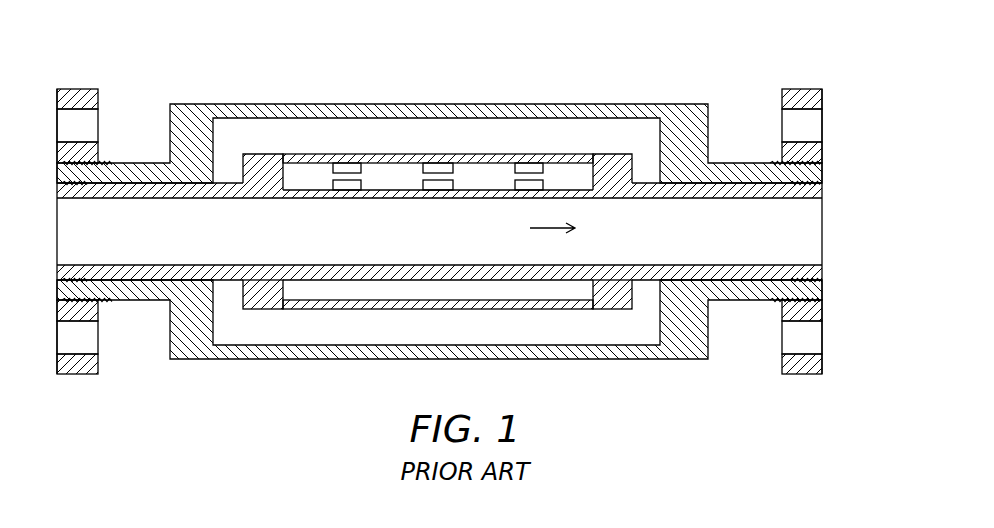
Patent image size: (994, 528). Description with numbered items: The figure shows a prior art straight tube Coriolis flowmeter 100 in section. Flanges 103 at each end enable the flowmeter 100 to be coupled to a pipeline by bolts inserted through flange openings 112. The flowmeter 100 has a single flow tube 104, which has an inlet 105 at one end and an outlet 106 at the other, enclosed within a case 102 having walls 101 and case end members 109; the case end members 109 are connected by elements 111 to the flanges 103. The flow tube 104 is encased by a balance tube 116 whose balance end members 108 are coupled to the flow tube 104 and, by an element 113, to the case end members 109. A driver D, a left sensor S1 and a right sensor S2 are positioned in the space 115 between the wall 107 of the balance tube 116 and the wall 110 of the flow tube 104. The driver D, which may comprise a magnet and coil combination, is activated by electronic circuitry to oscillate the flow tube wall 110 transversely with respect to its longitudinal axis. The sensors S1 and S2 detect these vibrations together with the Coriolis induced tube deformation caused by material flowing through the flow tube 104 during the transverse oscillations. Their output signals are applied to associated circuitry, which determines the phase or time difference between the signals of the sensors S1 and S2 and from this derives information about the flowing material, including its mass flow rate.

The straight tube Coriolis flowmeter 100 is at (268, 66).
The case walls 101 is at (283, 103).
The case 102 is at (455, 91).
The flanges 103 is at (77, 93).
The flow tube 104 is at (523, 234).
The inlet 105 is at (57, 247).
The outlet 106 is at (822, 232).
The wall of balance tube 107 is at (360, 170).
The balance end members 108 is at (240, 300).
The case end members 109 is at (168, 138).
The wall of flow tube 110 is at (365, 262).
The elements 111 is at (134, 300).
The flange openings 112 is at (62, 124).
The element 113 is at (237, 167).
The space 115 is at (520, 182).
The balance tube 116 is at (538, 144).
The left sensor S1 is at (406, 165).
The right sensor S2 is at (545, 172).
The driver D is at (489, 181).